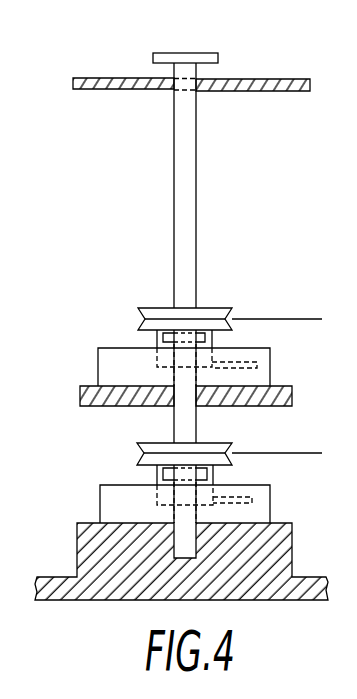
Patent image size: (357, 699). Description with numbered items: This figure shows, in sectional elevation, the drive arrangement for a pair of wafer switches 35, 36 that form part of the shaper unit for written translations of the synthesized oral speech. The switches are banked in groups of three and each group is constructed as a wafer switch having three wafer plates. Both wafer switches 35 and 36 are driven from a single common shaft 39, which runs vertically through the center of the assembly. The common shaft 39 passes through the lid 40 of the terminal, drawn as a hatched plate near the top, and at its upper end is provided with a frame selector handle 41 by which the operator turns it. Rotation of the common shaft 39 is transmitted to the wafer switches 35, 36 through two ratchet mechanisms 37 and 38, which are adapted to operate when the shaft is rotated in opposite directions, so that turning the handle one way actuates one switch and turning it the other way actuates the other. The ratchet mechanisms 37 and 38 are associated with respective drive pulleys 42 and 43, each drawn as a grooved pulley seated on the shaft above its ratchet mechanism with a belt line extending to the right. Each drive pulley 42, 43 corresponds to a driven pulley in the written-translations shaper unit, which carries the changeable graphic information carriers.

The wafer switch 35 is at (98, 362).
The wafer switch 36 is at (99, 503).
The ratchet mechanism 37 is at (157, 342).
The ratchet mechanism 38 is at (157, 478).
The common shaft 39 is at (188, 198).
The lid 40 is at (272, 79).
The frame selector handle 41 is at (202, 53).
The drive pulley 42 is at (218, 313).
The drive pulley 43 is at (220, 450).